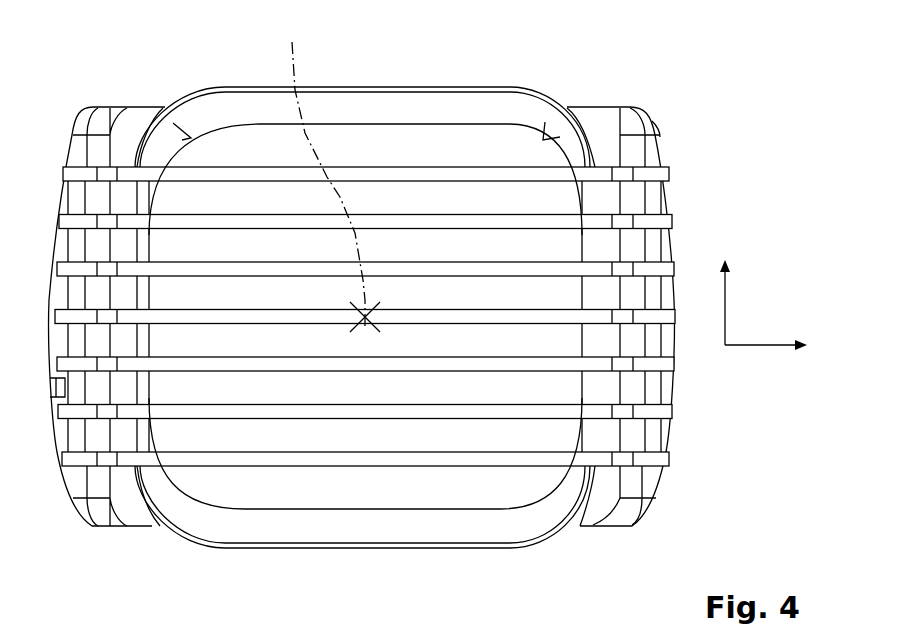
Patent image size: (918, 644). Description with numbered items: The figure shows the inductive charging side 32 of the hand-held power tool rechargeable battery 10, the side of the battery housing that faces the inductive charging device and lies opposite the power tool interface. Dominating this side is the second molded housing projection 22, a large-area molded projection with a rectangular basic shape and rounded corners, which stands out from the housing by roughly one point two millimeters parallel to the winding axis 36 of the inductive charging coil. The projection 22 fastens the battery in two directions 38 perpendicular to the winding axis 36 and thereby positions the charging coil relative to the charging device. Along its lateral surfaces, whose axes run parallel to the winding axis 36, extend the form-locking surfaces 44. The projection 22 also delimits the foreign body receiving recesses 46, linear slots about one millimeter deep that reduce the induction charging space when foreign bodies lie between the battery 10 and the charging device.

The hand-held power tool rechargeable battery 10 is at (694, 71).
The second molded housing projection 22 is at (505, 125).
The inductive charging side 32 is at (382, 157).
The winding axis 36 is at (328, 171).
The directions 38 is at (740, 346).
The form-locking surfaces 44 is at (190, 135).
The foreign body receiving recesses 46 is at (407, 458).